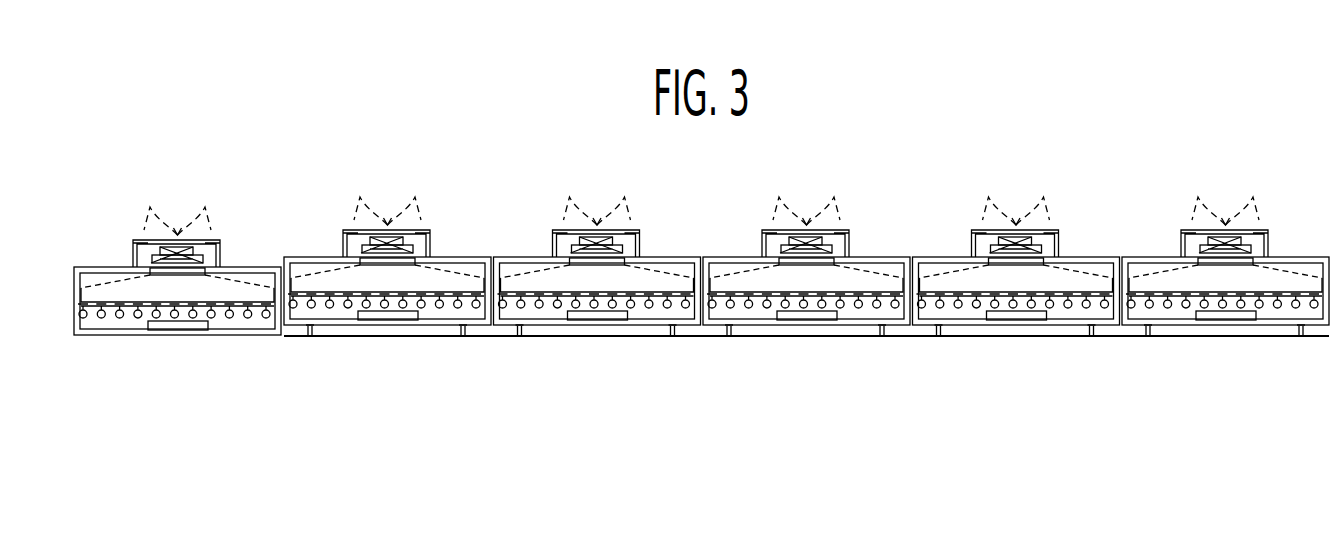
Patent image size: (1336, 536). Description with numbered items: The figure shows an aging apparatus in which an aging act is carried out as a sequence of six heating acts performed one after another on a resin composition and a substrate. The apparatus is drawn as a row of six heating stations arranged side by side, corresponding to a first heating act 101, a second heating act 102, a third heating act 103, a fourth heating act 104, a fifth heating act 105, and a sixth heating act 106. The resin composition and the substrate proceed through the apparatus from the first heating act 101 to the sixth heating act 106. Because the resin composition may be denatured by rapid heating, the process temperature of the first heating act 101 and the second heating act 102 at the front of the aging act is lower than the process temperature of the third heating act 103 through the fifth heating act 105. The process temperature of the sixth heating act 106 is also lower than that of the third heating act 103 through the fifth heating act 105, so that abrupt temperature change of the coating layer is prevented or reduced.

The first heating act 101 is at (236, 290).
The second heating act 102 is at (453, 282).
The third heating act 103 is at (645, 282).
The fourth heating act 104 is at (872, 282).
The fifth heating act 105 is at (1063, 282).
The sixth heating act 106 is at (1272, 282).